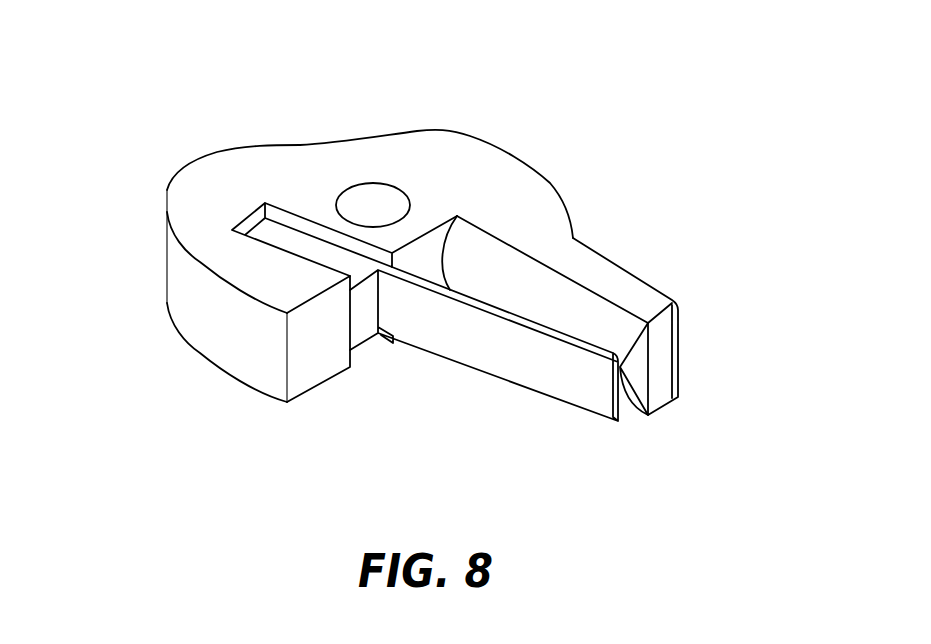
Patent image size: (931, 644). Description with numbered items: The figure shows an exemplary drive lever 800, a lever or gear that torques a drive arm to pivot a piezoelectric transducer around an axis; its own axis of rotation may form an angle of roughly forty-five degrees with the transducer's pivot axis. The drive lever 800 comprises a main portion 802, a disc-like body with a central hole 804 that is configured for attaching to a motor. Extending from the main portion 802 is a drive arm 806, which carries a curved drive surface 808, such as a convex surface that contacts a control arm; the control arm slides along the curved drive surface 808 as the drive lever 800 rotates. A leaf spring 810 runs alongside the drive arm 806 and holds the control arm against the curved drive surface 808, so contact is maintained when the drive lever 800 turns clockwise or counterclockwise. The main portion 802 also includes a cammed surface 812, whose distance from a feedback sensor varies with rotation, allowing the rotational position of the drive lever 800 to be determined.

The drive lever 800 is at (670, 154).
The main portion 802 is at (200, 208).
The central hole 804 is at (368, 208).
The drive arm 806 is at (593, 265).
The curved drive surface 808 is at (612, 322).
The leaf spring 810 is at (577, 377).
The cammed surface 812 is at (500, 150).